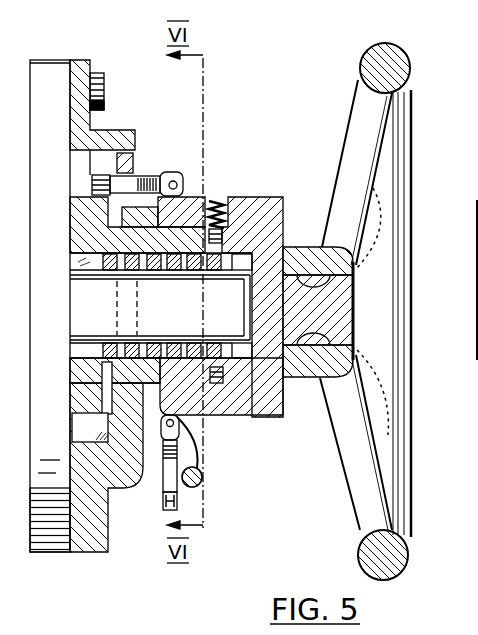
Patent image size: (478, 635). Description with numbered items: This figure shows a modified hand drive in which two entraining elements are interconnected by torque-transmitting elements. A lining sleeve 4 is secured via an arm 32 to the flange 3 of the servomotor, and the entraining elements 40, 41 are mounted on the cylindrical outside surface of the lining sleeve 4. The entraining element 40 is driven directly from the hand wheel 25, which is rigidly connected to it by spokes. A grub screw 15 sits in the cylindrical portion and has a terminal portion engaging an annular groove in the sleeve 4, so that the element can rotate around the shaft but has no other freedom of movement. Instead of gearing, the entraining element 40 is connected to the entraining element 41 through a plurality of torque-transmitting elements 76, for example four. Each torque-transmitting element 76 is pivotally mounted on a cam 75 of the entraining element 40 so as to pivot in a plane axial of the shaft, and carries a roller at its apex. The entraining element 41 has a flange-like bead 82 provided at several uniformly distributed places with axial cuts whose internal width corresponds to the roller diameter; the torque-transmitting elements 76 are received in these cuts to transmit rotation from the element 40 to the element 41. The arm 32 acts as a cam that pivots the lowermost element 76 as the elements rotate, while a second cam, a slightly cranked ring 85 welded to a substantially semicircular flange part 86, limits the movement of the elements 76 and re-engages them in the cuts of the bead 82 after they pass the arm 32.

The flange 3 is at (56, 542).
The lining sleeve 4 is at (231, 398).
The grub screw 15 is at (217, 203).
The hand wheel 25 is at (362, 58).
The arm 32 is at (127, 468).
The entraining element 40 is at (267, 222).
The entraining element 41 is at (78, 212).
The cam 75 is at (172, 172).
The torque-transmitting element 76 is at (157, 173).
The flange-like bead 82 is at (90, 423).
The ring 85 is at (202, 484).
The flange part 86 is at (128, 136).